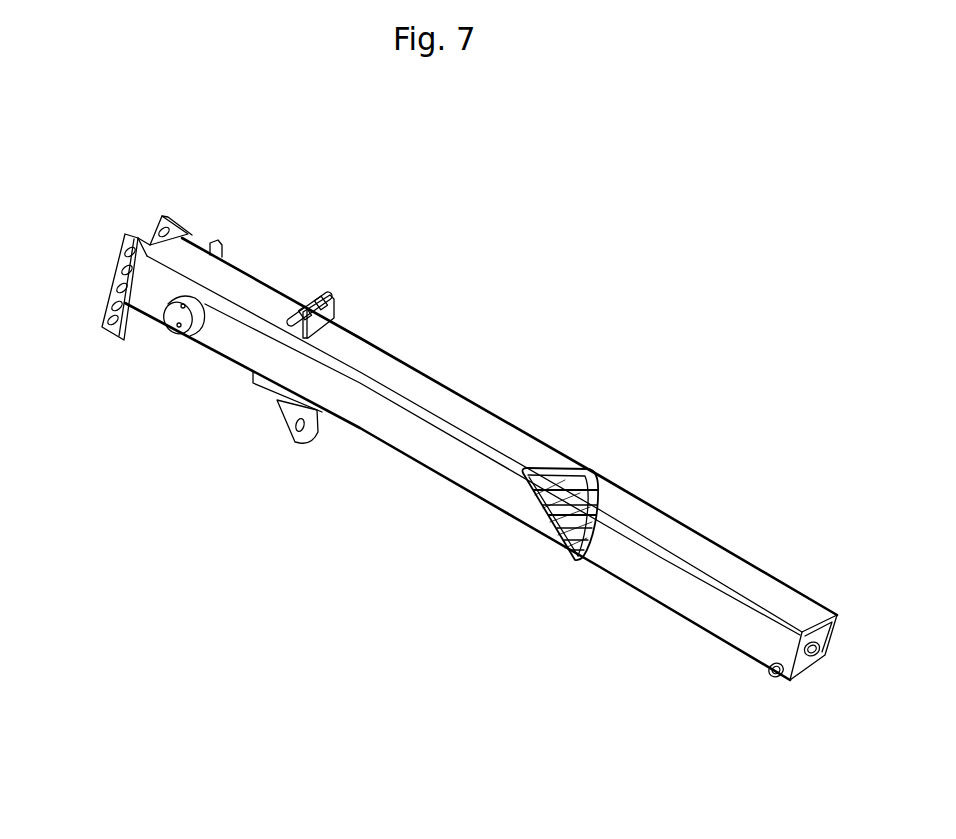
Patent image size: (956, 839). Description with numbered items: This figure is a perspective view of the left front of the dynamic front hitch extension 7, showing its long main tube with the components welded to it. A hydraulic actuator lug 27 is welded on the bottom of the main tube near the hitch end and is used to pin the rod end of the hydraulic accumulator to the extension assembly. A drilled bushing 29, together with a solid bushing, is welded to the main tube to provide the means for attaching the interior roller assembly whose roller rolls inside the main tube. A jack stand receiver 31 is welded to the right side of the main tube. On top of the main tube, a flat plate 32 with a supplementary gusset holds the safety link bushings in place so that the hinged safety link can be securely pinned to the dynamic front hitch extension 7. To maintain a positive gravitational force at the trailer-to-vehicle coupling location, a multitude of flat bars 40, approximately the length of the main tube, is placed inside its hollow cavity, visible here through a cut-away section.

The dynamic front hitch extension 7 is at (527, 428).
The hydraulic actuator lug 27 is at (298, 445).
The drilled bushing 29 is at (822, 727).
The jack stand receiver 31 is at (125, 376).
The flat plate 32 is at (389, 297).
The flat bars 40 is at (590, 473).